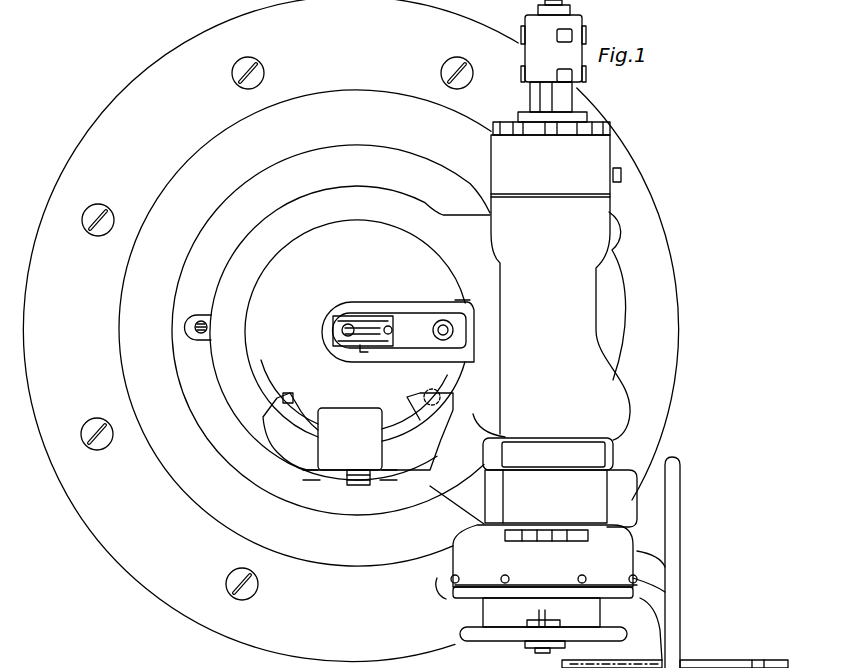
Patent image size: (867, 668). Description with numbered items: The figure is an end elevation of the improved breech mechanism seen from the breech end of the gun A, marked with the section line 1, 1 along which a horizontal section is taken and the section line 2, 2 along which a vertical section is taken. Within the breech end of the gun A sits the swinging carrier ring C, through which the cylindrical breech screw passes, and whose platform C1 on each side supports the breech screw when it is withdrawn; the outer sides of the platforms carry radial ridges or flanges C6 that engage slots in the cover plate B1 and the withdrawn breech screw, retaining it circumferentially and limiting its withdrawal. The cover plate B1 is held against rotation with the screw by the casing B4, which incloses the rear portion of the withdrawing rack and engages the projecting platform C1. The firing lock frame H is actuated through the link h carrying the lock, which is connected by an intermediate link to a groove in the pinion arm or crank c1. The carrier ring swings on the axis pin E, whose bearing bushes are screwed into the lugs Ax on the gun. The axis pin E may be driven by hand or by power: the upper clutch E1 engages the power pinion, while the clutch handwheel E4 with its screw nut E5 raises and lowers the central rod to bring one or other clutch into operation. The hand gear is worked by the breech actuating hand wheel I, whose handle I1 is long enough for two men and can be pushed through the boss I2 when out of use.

The section line 1 1 is at (135, 325).
The section line 2 2 is at (357, 48).
The breech end of the gun A is at (350, 331).
The lugs on the gun Ax is at (558, 391).
The cover plate B1 is at (355, 330).
The casing B4 is at (350, 446).
The swinging carrier ring C is at (256, 376).
The platform C1 is at (358, 431).
The radial ridge or flange C6 is at (283, 393).
The pinion arm or crank c1 is at (432, 255).
The axis pin E is at (530, 88).
The upper clutch E1 is at (553, 41).
The clutch handwheel E4 is at (593, 635).
The screw nut E5 is at (515, 620).
The firing lock frame H is at (398, 318).
The link h is at (393, 334).
The breech actuating hand wheel I is at (680, 476).
The handle I1 is at (717, 660).
The boss I2 is at (682, 660).